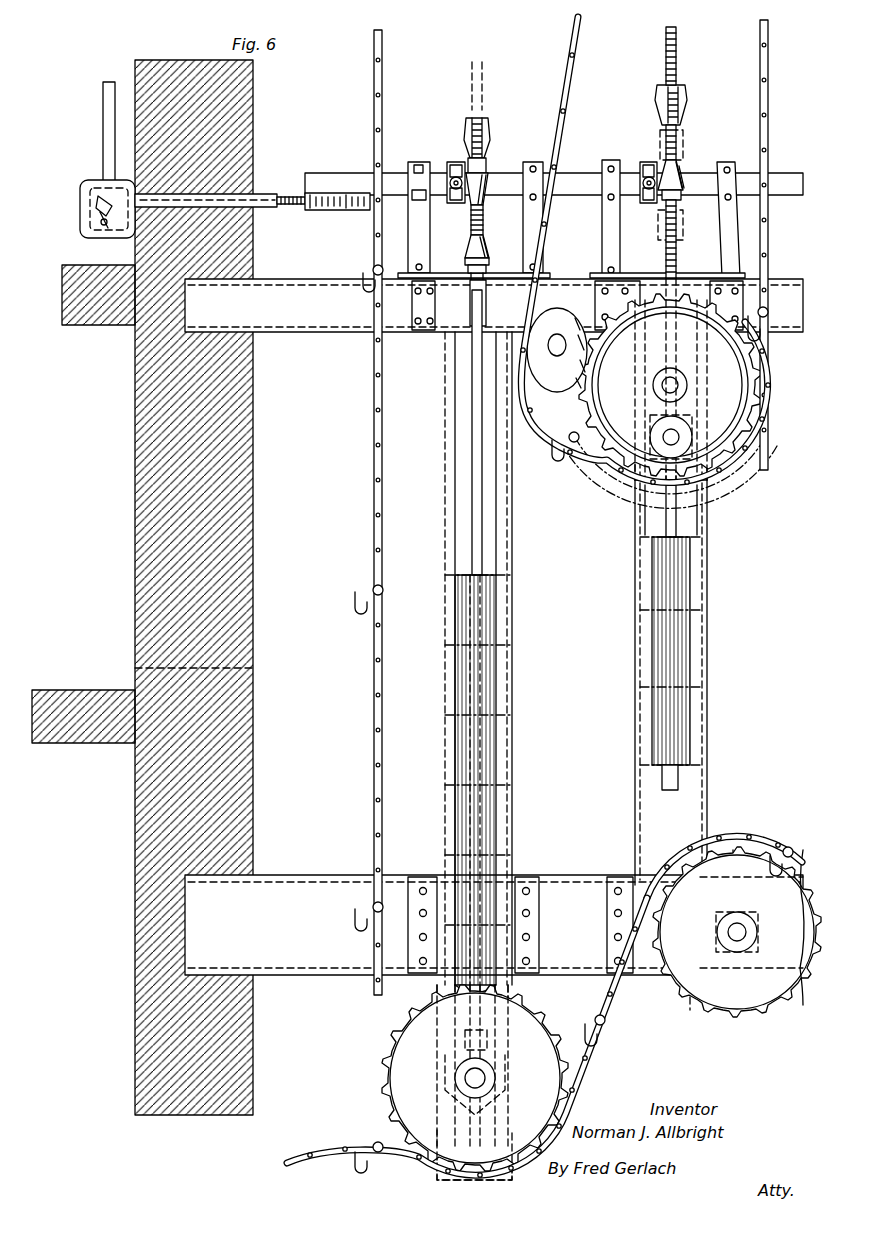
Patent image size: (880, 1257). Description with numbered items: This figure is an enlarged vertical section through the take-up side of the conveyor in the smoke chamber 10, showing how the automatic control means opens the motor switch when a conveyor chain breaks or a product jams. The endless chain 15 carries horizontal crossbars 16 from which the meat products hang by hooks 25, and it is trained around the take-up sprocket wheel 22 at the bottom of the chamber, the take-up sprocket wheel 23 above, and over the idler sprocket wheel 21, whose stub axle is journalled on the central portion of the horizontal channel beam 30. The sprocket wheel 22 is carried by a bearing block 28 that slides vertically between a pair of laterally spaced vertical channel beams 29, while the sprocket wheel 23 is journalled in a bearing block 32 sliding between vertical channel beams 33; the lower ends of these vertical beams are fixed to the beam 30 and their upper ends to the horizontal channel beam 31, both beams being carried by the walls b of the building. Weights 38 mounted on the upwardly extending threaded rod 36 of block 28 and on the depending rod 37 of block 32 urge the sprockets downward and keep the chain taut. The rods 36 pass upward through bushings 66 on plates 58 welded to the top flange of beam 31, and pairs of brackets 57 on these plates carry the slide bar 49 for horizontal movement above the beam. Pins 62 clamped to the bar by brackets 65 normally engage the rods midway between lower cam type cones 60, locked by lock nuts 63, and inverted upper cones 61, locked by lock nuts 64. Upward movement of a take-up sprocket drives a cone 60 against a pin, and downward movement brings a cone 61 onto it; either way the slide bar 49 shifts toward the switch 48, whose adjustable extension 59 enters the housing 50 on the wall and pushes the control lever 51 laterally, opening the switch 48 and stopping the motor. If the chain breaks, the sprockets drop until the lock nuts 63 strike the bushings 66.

The smoke chamber 10 is at (254, 118).
The wall b is at (243, 149).
The endless chain 15 is at (374, 127).
The crossbar 16 is at (384, 590).
The idler sprocket wheel 21 is at (703, 1018).
The take-up sprocket wheel 22 is at (395, 1096).
The take-up sprocket wheel 23 is at (752, 385).
The hook 25 is at (360, 612).
The bearing block 28 is at (445, 1110).
The channel beam 29 is at (512, 500).
The channel beam 30 is at (297, 975).
The channel beam 31 is at (299, 328).
The bearing block 32 is at (690, 410).
The channel beam 33 is at (709, 660).
The rod 36 is at (677, 70).
The depending rod 37 is at (700, 505).
The weight 38 is at (488, 660).
The switch 48 is at (82, 235).
The slide bar 49 is at (332, 176).
The housing 50 is at (92, 211).
The control lever 51 is at (96, 223).
The bracket 57 is at (428, 234).
The plate 58 is at (445, 270).
The adjustable extension 59 is at (308, 209).
The lower cam type cone 60 is at (489, 246).
The inverted cam type cone 61 is at (485, 196).
The pin 62 is at (456, 176).
The lock nut 63 is at (489, 268).
The lock nut 64 is at (486, 172).
The bracket 65 is at (545, 200).
The bushing 66 is at (468, 322).